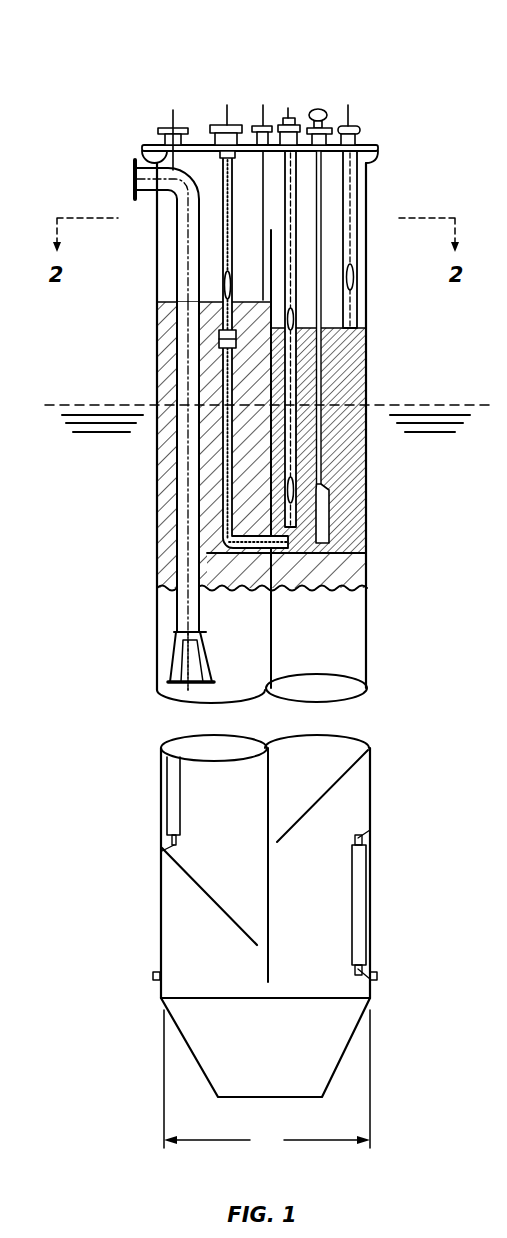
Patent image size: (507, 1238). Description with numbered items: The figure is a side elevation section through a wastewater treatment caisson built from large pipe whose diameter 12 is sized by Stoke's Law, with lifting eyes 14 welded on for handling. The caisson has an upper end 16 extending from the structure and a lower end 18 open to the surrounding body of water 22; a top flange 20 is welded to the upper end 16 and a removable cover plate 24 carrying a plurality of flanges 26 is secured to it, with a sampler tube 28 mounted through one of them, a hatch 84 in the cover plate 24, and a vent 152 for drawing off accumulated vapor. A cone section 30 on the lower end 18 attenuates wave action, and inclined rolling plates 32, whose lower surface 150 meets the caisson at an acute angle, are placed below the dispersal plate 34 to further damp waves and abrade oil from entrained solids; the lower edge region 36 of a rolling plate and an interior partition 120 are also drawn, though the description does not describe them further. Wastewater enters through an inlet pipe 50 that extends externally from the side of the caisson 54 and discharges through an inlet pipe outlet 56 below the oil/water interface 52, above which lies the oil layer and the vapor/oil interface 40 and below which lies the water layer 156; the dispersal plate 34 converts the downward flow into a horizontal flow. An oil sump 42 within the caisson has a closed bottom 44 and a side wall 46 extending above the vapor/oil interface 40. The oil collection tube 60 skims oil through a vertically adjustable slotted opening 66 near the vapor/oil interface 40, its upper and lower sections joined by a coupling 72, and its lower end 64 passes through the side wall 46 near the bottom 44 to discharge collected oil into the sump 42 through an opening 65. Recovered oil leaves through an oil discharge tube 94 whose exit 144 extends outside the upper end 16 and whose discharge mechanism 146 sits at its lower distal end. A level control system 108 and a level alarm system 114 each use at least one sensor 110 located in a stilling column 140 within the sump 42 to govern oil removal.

The caisson diameter 12 is at (267, 1081).
The lifting eyes 14 is at (368, 150).
The upper end 16 is at (363, 328).
The lower end 18 is at (162, 940).
The top flange 20 is at (147, 163).
The body of water 22 is at (86, 399).
The removable cover plate 24 is at (157, 143).
The flanges 26 is at (355, 125).
The sampler tube 28 is at (259, 125).
The cone section 30 is at (360, 1020).
The rolling plates 32 is at (200, 885).
The dispersal plate 34 is at (198, 680).
The baffle lower end 36 is at (268, 977).
The vapor/oil interface 40 is at (157, 301).
The oil sump 42 is at (363, 457).
The bottom 44 is at (368, 548).
The side wall 46 is at (165, 497).
The inlet pipe 50 is at (133, 168).
The oil/water interface 52 is at (368, 575).
The side of the caisson 54 is at (370, 612).
The inlet pipe outlet 56 is at (190, 640).
The oil collection tube 60 is at (222, 266).
The lower end 64 is at (258, 553).
The opening 65 is at (287, 540).
The slotted opening 66 is at (271, 298).
The coupling 72 is at (219, 338).
The hatch 84 is at (230, 125).
The oil discharge tube 94 is at (322, 216).
The level control system 108 is at (287, 117).
The sensor 110 is at (292, 177).
The level alarm system 114 is at (348, 113).
The partition 120 is at (263, 808).
The stilling column 140 is at (352, 255).
The exit 144 is at (321, 110).
The discharge mechanism 146 is at (332, 500).
The lower surface 150 is at (168, 808).
The vent 152 is at (173, 127).
The water layer 156 is at (358, 648).